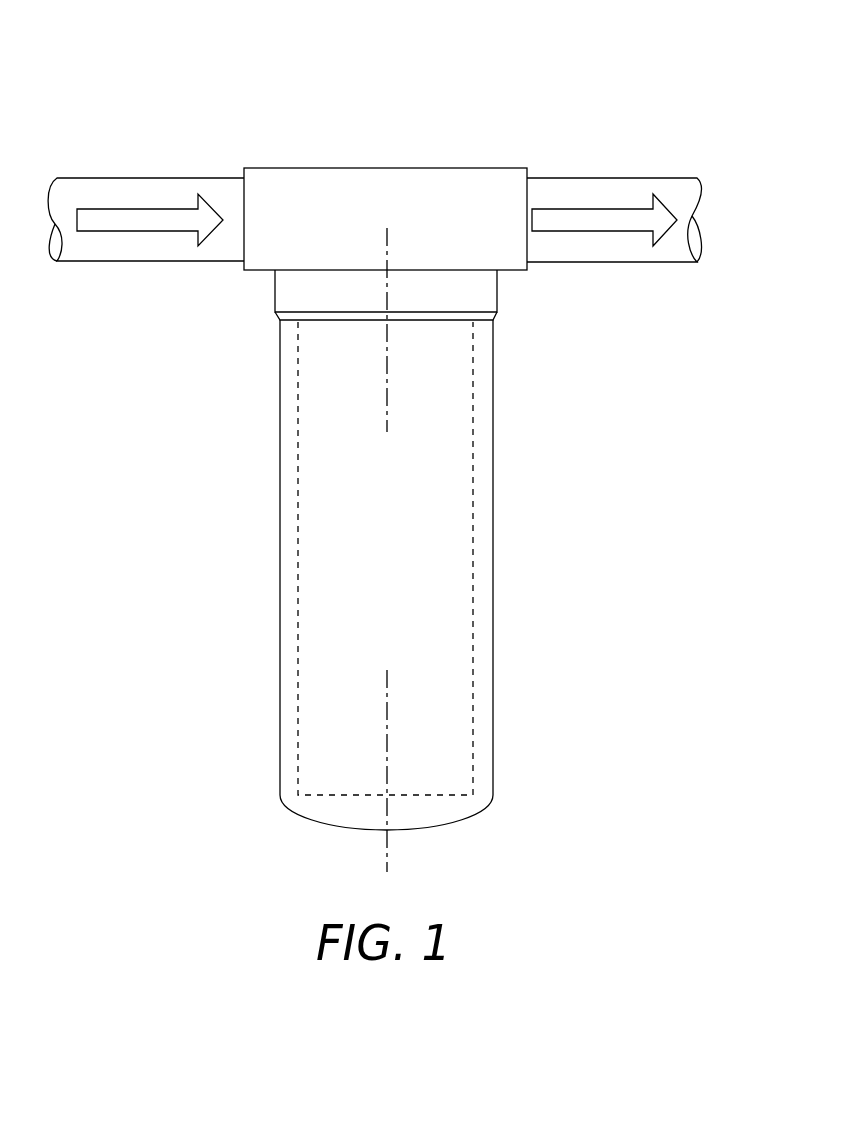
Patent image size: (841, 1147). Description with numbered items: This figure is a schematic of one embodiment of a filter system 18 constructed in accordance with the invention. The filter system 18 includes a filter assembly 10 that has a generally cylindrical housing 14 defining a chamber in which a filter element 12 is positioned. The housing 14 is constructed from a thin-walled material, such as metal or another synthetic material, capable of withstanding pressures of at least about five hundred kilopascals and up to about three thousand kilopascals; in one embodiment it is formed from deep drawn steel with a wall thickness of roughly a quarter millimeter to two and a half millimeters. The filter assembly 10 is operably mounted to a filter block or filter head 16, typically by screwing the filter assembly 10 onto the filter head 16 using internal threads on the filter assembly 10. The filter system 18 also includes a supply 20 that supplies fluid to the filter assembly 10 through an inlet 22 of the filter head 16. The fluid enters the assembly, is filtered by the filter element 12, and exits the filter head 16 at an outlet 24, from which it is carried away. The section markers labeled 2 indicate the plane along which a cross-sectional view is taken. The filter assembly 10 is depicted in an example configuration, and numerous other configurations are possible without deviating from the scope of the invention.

The filter assembly 10 is at (551, 465).
The filter element 12 is at (298, 565).
The housing 14 is at (280, 443).
The filter head 16 is at (397, 168).
The filter system 18 is at (459, 72).
The supply 20 is at (181, 178).
The inlet 22 is at (243, 267).
The outlet 24 is at (529, 173).
The section line 2- 2 is at (380, 241).